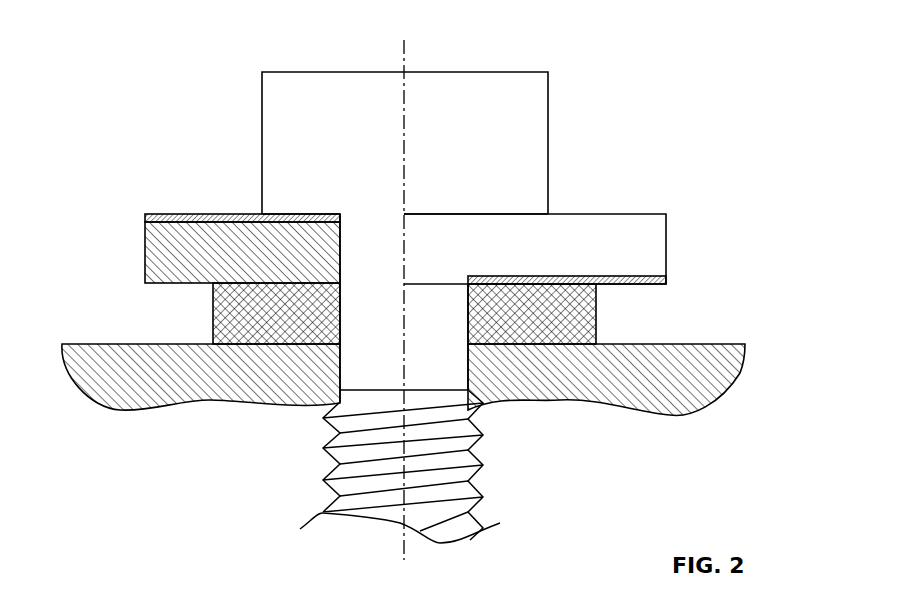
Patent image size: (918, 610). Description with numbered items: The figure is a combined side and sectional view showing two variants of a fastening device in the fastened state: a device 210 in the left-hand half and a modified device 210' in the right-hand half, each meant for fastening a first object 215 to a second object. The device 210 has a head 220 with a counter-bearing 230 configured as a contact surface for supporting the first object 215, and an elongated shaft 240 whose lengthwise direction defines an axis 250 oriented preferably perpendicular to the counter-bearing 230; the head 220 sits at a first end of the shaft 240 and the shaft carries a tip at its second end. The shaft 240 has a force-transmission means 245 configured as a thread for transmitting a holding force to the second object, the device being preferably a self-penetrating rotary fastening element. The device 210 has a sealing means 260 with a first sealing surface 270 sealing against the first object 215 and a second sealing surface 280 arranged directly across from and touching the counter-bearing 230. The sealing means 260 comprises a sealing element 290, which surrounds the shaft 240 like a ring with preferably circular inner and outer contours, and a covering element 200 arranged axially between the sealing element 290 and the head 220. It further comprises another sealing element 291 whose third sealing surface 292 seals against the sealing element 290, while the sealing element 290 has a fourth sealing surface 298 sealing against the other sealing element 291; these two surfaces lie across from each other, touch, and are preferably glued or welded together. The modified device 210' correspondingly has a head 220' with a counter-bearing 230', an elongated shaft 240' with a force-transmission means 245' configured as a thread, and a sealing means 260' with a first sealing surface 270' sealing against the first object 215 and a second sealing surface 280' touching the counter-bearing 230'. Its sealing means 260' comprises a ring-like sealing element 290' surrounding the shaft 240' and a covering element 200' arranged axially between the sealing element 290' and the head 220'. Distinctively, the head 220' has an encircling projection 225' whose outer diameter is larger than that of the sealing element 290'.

The device 210 is at (390, 290).
The modified device 210' is at (596, 279).
The first object 215 is at (140, 393).
The head 220 is at (367, 140).
The head 220' is at (585, 80).
The encircling projection 225' is at (558, 210).
The counter-bearing 230 is at (217, 182).
The counter-bearing 230' is at (616, 273).
The shaft 240 is at (330, 259).
The shaft 240' is at (546, 224).
The force-transmission means 245 is at (366, 466).
The force-transmission means 245' is at (531, 522).
The axis 250 is at (475, 290).
The sealing means 260 is at (187, 313).
The sealing means 260' is at (594, 307).
The first sealing surface 270 is at (191, 414).
The first sealing surface 270' is at (570, 315).
The second sealing surface 280 is at (237, 186).
The second sealing surface 280' is at (685, 227).
The sealing element 290 is at (206, 252).
The sealing element 290' is at (564, 411).
The other sealing element 291 is at (213, 315).
The third sealing surface 292 is at (180, 279).
The fourth sealing surface 298 is at (285, 285).
The covering element 200 is at (206, 216).
The covering element 200' is at (688, 249).